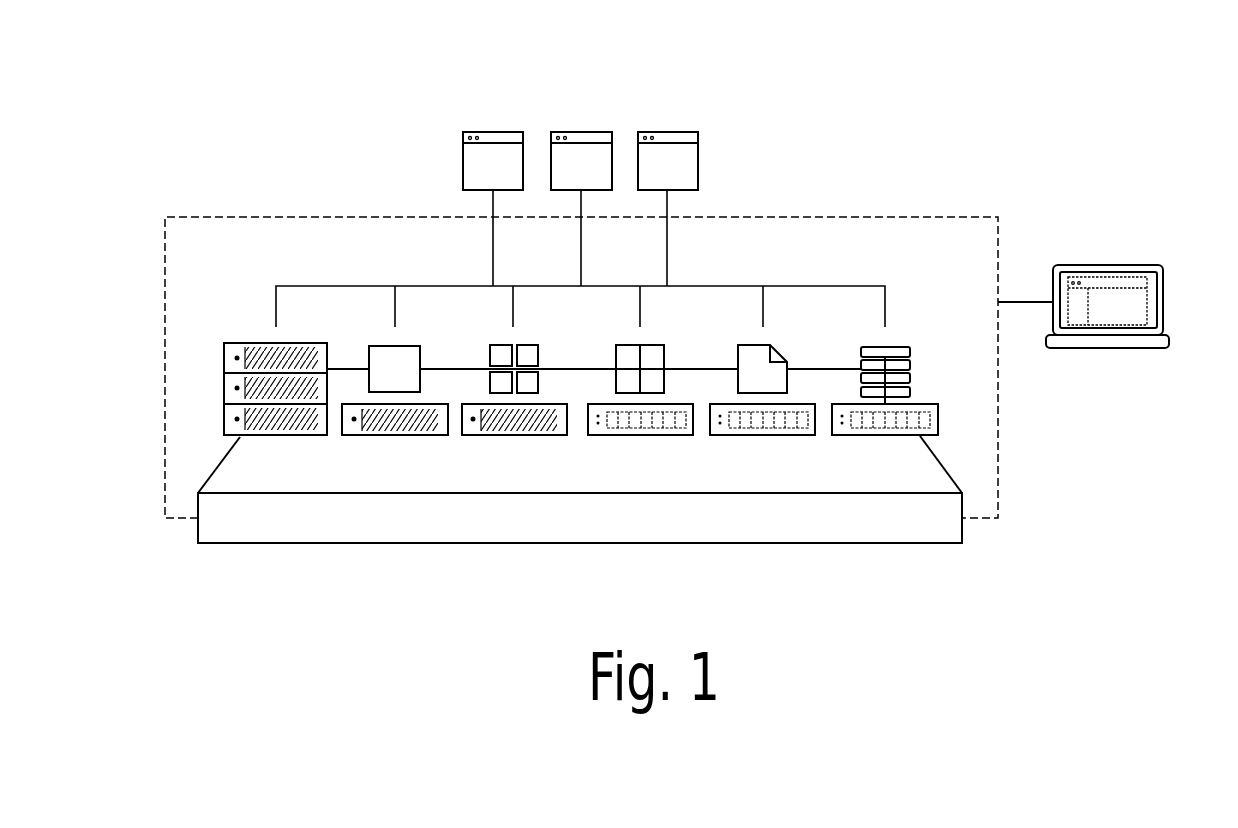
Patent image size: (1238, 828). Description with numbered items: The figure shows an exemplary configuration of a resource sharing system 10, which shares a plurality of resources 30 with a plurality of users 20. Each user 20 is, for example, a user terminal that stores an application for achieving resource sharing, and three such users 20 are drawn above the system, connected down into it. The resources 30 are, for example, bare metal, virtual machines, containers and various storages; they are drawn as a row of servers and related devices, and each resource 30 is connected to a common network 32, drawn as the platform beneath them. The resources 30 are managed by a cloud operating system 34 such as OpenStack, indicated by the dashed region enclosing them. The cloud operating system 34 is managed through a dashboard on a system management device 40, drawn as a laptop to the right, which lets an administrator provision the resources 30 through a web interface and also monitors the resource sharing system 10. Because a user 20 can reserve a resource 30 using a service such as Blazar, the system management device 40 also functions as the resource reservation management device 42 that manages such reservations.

The resource sharing system 10 is at (955, 86).
The user 20 is at (493, 130).
The resource 30 is at (581, 404).
The common network 32 is at (583, 543).
The cloud operating system 34 is at (165, 342).
The system management device 40 is at (1098, 294).
The resource reservation management device 42 is at (1110, 265).